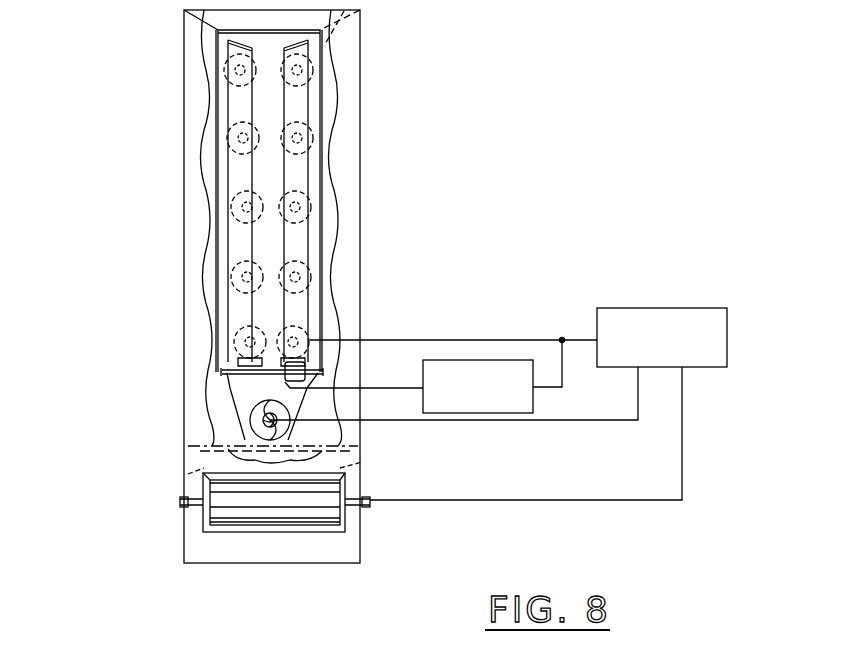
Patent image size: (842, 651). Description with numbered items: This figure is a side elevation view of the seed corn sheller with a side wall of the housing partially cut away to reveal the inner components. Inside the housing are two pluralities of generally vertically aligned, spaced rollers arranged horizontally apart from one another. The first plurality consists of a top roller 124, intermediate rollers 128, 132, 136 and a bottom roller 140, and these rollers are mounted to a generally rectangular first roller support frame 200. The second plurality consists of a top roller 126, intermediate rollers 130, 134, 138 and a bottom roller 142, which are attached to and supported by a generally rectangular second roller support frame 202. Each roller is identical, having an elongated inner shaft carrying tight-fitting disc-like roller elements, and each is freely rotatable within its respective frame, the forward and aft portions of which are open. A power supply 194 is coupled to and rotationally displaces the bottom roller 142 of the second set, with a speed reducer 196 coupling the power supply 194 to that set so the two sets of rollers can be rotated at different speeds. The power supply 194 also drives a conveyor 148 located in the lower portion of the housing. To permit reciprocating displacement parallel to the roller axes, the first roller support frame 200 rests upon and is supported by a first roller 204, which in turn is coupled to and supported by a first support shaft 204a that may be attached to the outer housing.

The top roller 124 is at (312, 68).
The top roller 126 is at (226, 68).
The intermediate roller 128 is at (313, 138).
The intermediate roller 130 is at (228, 140).
The intermediate roller 132 is at (311, 208).
The intermediate roller 134 is at (232, 207).
The intermediate roller 136 is at (311, 275).
The intermediate roller 138 is at (232, 277).
The bottom roller 140 is at (309, 331).
The bottom roller 142 is at (234, 343).
The conveyor 148 is at (227, 503).
The power supply 194 is at (713, 310).
The speed reducer 196 is at (533, 399).
The first roller support frame 200 is at (306, 105).
The second roller support frame 202 is at (224, 107).
The first roller 204 is at (306, 378).
The first support shaft 204a is at (220, 373).